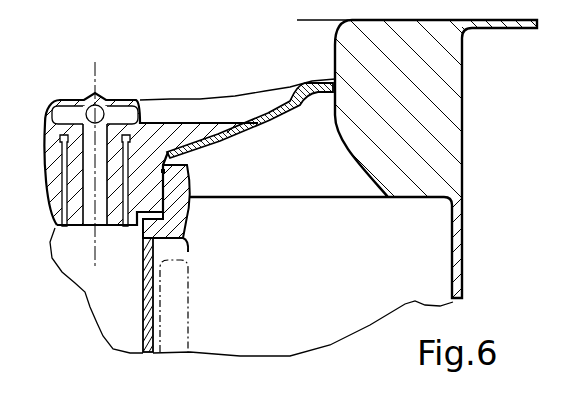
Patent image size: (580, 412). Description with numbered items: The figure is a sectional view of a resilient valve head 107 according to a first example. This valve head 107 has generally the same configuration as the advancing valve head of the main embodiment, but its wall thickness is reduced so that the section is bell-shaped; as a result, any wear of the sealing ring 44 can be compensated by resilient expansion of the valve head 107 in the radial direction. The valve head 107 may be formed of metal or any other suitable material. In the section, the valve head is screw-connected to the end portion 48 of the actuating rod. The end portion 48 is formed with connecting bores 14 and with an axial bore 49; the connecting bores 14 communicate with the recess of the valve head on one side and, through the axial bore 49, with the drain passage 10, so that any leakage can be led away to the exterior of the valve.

The drain passage 10 is at (125, 340).
The connecting bores 14 is at (182, 206).
The sealing ring 44 is at (335, 95).
The end portion 48 is at (72, 227).
The axial bore 49 is at (101, 212).
The valve head 107 is at (262, 143).